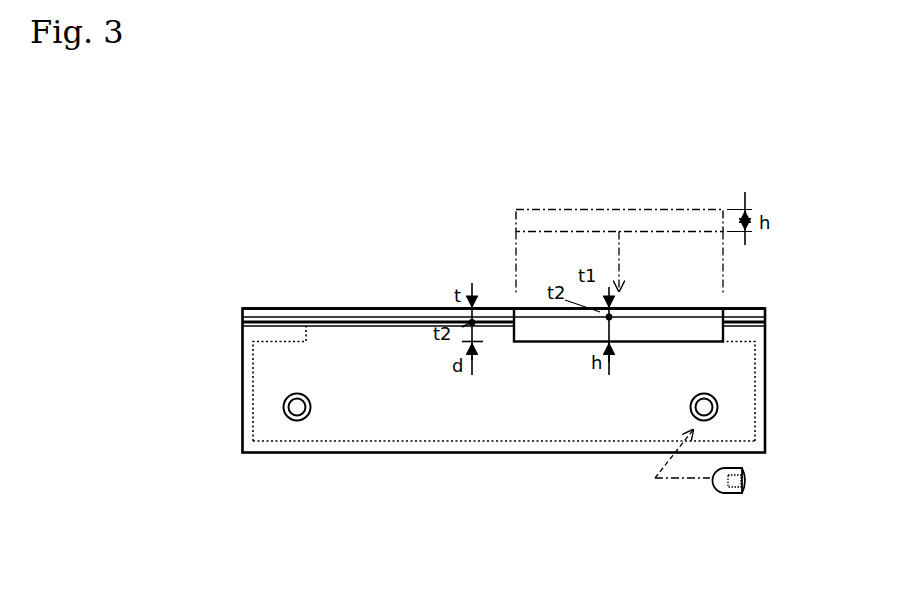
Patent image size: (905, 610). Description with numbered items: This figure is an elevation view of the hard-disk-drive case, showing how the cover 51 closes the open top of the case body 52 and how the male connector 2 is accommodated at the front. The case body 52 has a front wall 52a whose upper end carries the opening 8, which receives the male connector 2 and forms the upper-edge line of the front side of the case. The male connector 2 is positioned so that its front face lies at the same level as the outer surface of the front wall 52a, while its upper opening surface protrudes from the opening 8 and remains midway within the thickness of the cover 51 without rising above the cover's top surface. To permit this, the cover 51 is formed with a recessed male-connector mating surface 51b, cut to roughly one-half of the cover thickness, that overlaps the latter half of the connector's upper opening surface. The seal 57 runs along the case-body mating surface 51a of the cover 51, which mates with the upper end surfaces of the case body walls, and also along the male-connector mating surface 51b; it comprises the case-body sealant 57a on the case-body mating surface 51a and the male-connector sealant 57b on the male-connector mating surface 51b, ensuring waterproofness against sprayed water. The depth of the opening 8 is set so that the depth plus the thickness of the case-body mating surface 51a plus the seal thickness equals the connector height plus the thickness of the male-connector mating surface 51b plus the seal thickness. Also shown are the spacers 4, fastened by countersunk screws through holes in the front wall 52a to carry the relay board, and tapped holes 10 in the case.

The male connector 2 is at (627, 210).
The spacer 4 is at (718, 493).
The opening on the front wall 8 is at (552, 336).
The tapped hole 10 is at (720, 405).
The cover 51 is at (328, 308).
The case-body mating surface 51a is at (273, 315).
The male-connector mating surface 51b is at (663, 315).
The case body 52 is at (242, 380).
The front wall 52a is at (423, 407).
The seal 57 is at (519, 239).
The case-body sealant 57a is at (407, 318).
The male-connector sealant 57b is at (525, 315).